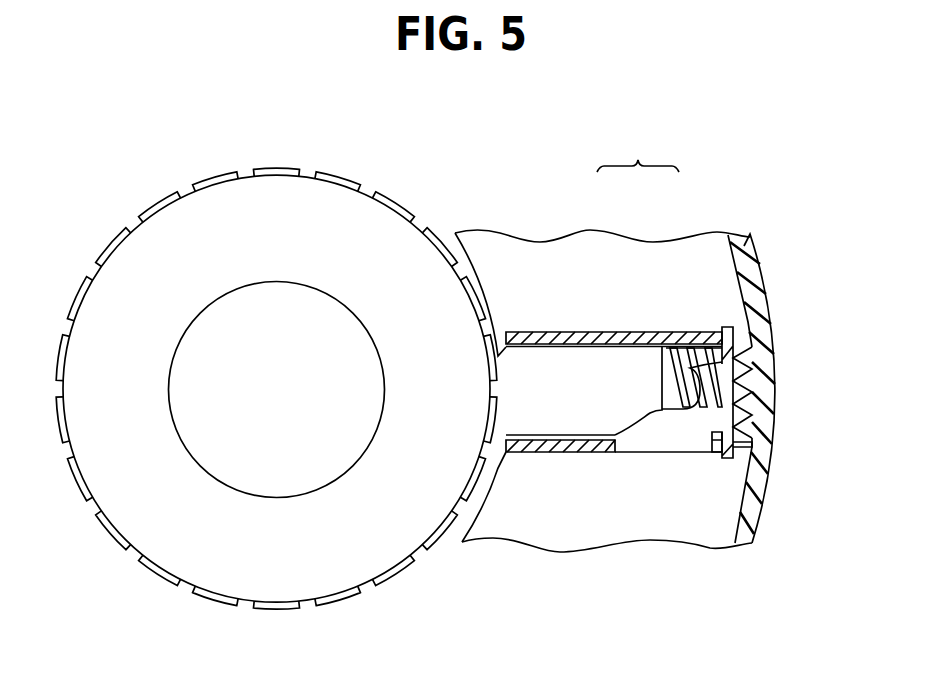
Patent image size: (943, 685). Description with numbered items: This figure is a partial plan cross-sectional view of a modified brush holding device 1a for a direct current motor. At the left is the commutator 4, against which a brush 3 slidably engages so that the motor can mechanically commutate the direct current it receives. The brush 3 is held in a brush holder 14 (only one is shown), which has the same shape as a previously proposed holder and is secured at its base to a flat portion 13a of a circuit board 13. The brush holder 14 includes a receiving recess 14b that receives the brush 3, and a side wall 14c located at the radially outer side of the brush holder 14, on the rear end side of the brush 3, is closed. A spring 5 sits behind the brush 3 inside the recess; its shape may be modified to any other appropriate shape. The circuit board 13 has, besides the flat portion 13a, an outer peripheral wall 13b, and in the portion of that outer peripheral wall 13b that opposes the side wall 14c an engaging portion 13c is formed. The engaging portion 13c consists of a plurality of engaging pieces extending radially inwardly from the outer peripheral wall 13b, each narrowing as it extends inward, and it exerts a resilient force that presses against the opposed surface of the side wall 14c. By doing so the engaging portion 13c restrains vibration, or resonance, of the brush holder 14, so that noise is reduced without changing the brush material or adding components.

The commutator 4 is at (340, 175).
The brush holding device 1a is at (638, 152).
The brush holder 14 is at (603, 332).
The circuit board 13 is at (660, 240).
The receiving recess 14b is at (553, 347).
The spring 5 is at (672, 348).
The engaging portion 13c is at (745, 350).
The brush 3 is at (567, 432).
The side wall 14c is at (740, 448).
The flat portion 13a is at (609, 535).
The outer peripheral wall 13b is at (736, 543).